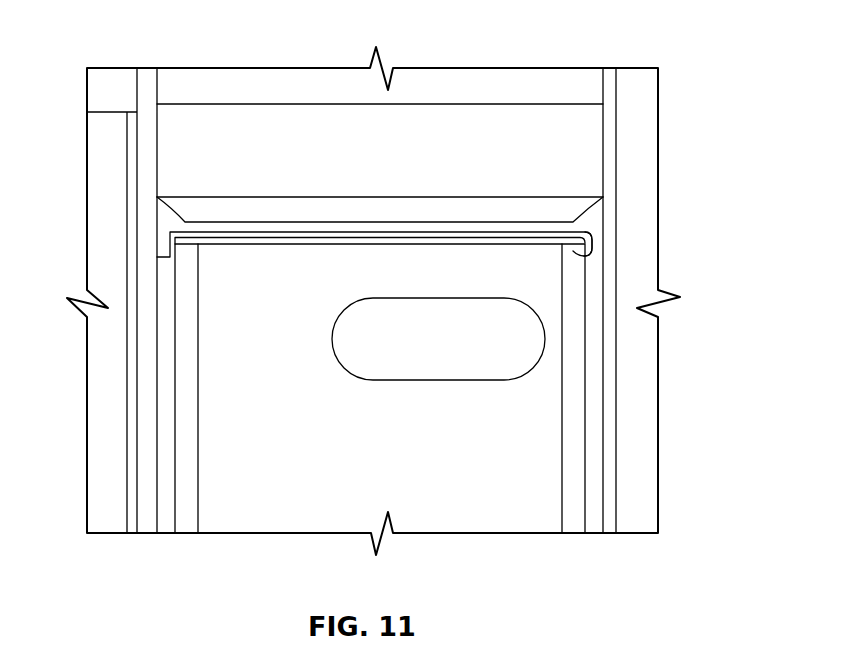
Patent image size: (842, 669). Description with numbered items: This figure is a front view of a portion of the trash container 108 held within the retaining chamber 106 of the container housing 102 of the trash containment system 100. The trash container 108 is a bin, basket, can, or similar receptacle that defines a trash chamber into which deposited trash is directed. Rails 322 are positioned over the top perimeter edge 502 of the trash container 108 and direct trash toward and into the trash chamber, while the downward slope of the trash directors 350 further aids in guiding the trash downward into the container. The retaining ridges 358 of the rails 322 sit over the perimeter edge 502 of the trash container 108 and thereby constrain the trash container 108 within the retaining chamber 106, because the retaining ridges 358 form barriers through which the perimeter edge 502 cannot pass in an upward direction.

The trash containment system 100 is at (182, 68).
The container housing 102 is at (618, 435).
The retaining chamber 106 is at (537, 131).
The trash container 108 is at (488, 503).
The rails 322 is at (568, 212).
The trash directors 350 is at (530, 207).
The retaining ridges 358 is at (593, 255).
The top perimeter edge 502 is at (190, 245).